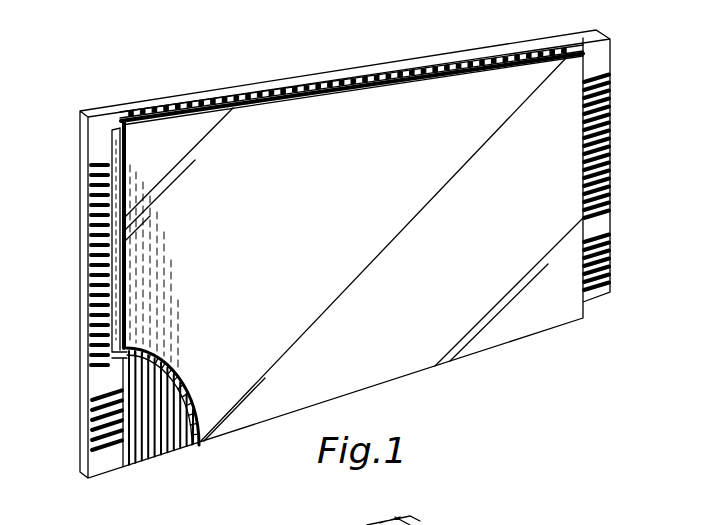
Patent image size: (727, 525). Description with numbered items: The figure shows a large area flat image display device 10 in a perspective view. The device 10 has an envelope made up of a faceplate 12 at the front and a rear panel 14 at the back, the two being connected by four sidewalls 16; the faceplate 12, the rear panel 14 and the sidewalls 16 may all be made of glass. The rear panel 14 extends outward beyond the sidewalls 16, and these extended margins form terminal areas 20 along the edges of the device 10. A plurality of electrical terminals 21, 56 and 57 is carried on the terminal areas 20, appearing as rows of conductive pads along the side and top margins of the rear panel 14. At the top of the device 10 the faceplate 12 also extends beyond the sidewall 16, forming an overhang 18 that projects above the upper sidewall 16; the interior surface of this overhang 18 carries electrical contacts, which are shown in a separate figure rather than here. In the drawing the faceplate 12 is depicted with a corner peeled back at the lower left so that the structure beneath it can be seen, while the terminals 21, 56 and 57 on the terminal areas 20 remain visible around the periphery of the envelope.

The image display device 10 is at (563, 367).
The faceplate 12 is at (424, 368).
The rear panel 14 is at (386, 68).
The sidewalls 16 is at (118, 128).
The overhang 18 is at (277, 116).
The terminal areas 20 is at (90, 213).
The electrical terminals 21 is at (60, 436).
The electrical terminals 56 is at (549, 46).
The electrical terminals 57 is at (169, 103).